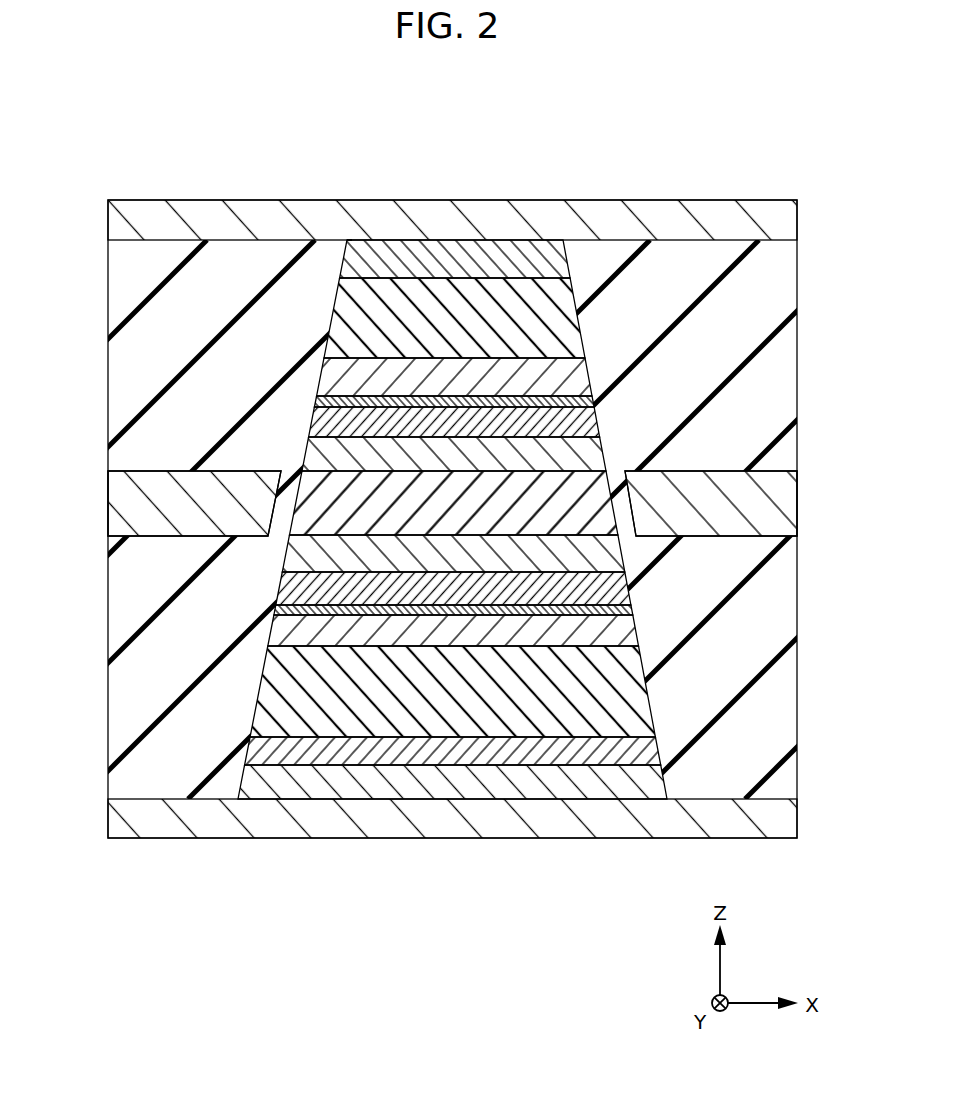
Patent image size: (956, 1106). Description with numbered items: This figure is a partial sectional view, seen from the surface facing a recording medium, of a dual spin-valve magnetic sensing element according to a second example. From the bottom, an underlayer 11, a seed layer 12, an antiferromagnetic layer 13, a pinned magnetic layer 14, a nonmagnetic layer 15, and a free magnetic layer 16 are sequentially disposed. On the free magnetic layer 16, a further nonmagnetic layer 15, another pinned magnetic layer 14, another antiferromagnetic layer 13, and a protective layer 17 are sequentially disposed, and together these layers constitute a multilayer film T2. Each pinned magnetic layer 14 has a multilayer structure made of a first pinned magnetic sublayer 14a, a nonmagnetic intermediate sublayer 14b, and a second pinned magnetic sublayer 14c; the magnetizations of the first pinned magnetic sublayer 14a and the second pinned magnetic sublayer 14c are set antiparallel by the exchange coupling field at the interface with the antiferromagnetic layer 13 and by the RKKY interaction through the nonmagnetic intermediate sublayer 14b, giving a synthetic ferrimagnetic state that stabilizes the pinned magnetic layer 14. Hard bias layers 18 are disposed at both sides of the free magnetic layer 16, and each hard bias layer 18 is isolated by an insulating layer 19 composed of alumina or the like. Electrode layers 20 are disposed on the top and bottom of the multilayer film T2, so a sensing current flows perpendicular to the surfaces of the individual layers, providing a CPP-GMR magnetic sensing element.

The underlayer 11 is at (612, 790).
The seed layer 12 is at (583, 753).
The antiferromagnetic layer 13 is at (356, 290).
The pinned magnetic layer 14 is at (425, 510).
The first pinned magnetic sublayer 14a is at (560, 380).
The nonmagnetic intermediate sublayer 14b is at (532, 402).
The second pinned magnetic sublayer 14c is at (483, 422).
The nonmagnetic layer 15 is at (388, 443).
The free magnetic layer 16 is at (482, 503).
The protective layer 17 is at (418, 263).
The hard bias layer 18 is at (122, 490).
The insulating layer 19 is at (108, 303).
The electrode layer 20 is at (790, 214).
The multilayer film T2 is at (370, 228).